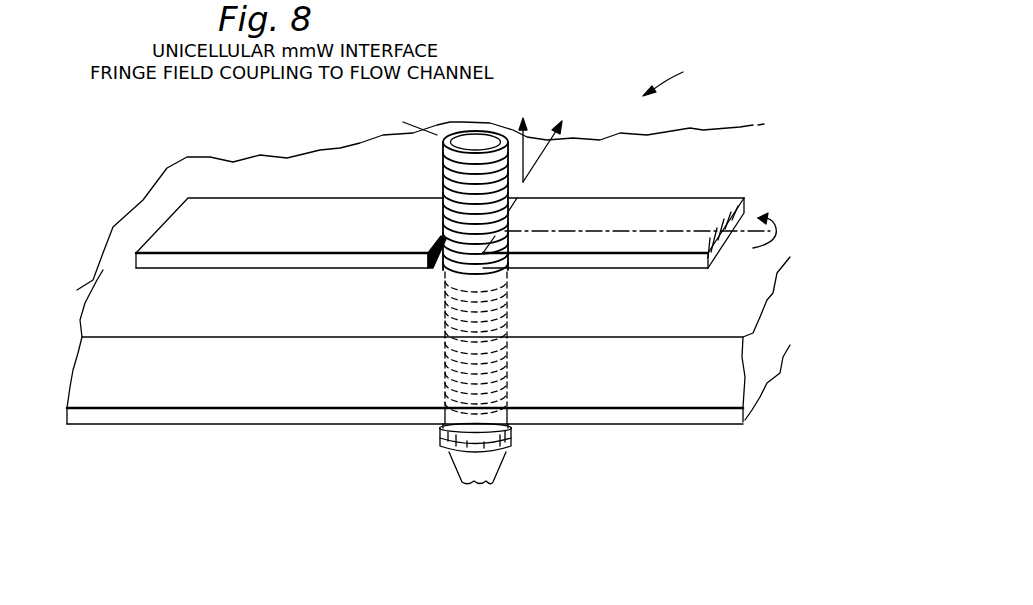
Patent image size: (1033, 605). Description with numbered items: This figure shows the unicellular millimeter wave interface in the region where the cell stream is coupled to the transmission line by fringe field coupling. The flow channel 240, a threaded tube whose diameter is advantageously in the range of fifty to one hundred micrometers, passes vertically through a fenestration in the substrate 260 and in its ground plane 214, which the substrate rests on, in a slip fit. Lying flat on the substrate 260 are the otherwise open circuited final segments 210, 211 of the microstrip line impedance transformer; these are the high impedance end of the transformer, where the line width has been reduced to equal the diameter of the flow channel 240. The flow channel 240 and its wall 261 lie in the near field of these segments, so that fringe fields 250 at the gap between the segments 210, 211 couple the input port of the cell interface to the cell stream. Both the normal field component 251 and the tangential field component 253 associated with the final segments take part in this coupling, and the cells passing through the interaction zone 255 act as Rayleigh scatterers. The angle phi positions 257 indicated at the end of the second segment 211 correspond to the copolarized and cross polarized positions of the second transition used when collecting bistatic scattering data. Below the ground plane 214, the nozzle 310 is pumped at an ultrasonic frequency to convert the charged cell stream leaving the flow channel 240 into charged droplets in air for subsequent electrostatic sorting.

The final segment of the microstrip line impedance transformer 210 is at (357, 210).
The final segment of the microstrip line impedance transformer 211 is at (586, 205).
The ground plane 214 is at (614, 418).
The flow channel 240 is at (476, 140).
The fringe fields 250 is at (438, 274).
The normal field component 251 is at (524, 137).
The tangential field component 253 is at (554, 139).
The interaction zone 255 is at (683, 76).
The angle phi positions 257 is at (669, 230).
The substrate 260 is at (702, 145).
The wall 261 is at (400, 121).
The nozzle 310 is at (496, 470).